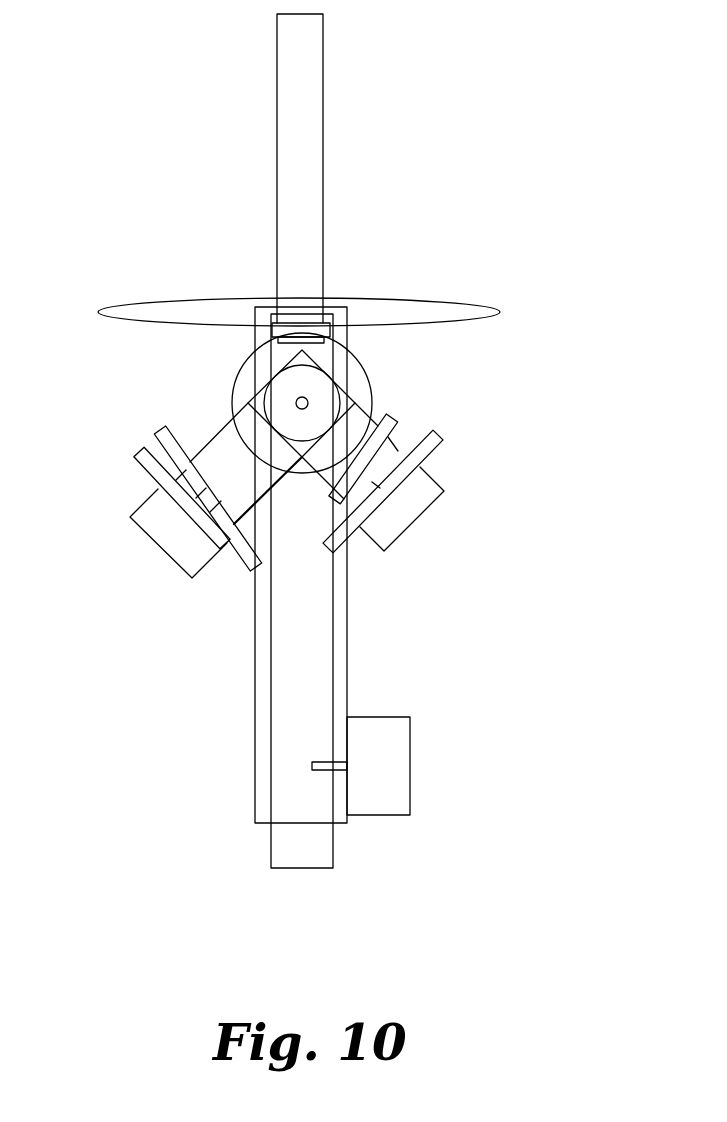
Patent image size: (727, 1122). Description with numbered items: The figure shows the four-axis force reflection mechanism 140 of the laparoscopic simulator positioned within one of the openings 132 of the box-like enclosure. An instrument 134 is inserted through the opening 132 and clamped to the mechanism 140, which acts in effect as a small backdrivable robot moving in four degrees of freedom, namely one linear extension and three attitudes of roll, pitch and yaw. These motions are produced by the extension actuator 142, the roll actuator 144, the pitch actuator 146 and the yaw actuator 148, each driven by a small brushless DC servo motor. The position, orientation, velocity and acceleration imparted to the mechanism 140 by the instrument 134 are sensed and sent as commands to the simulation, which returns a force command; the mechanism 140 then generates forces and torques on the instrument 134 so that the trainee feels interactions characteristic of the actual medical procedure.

The opening 132 is at (181, 308).
The instrument 134 is at (325, 133).
The force reflection mechanism 140 is at (200, 674).
The extension actuator 142 is at (412, 729).
The roll actuator 144 is at (290, 397).
The pitch actuator 146 is at (152, 550).
The yaw actuator 148 is at (434, 508).